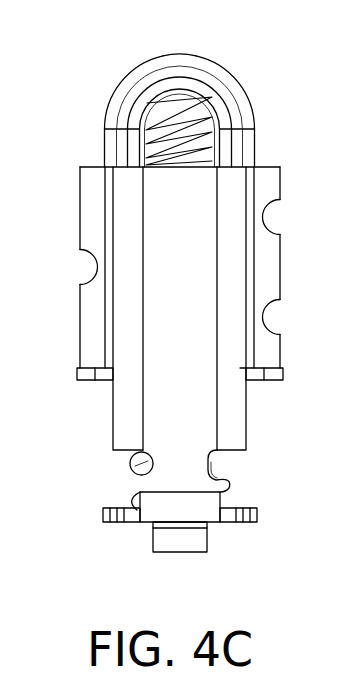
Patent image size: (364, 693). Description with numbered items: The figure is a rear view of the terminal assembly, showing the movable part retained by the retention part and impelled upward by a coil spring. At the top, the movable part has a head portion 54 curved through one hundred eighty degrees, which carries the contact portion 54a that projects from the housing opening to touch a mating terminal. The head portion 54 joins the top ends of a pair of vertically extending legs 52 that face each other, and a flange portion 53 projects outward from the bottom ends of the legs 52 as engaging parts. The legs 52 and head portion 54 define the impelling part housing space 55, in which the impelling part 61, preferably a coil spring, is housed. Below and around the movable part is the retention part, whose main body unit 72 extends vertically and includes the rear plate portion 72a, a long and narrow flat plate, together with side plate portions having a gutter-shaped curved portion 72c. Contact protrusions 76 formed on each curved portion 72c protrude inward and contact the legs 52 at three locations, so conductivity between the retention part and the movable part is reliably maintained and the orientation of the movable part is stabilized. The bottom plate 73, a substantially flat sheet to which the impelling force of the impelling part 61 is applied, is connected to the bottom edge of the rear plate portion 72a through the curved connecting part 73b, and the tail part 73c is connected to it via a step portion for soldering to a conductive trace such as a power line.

The legs 52 is at (257, 150).
The flange portion 53 is at (284, 376).
The head portion 54 is at (233, 76).
The contact portion 54a is at (180, 54).
The impelling part housing space 55 is at (212, 117).
The impelling part 61 is at (150, 143).
The main body unit 72 is at (113, 437).
The rear plate portion 72a is at (198, 416).
The curved portion 72c is at (281, 265).
The bottom plate 73 is at (257, 516).
The connecting part 73b is at (207, 510).
The tail part 73c is at (153, 546).
The contact protrusion 76 is at (271, 218).